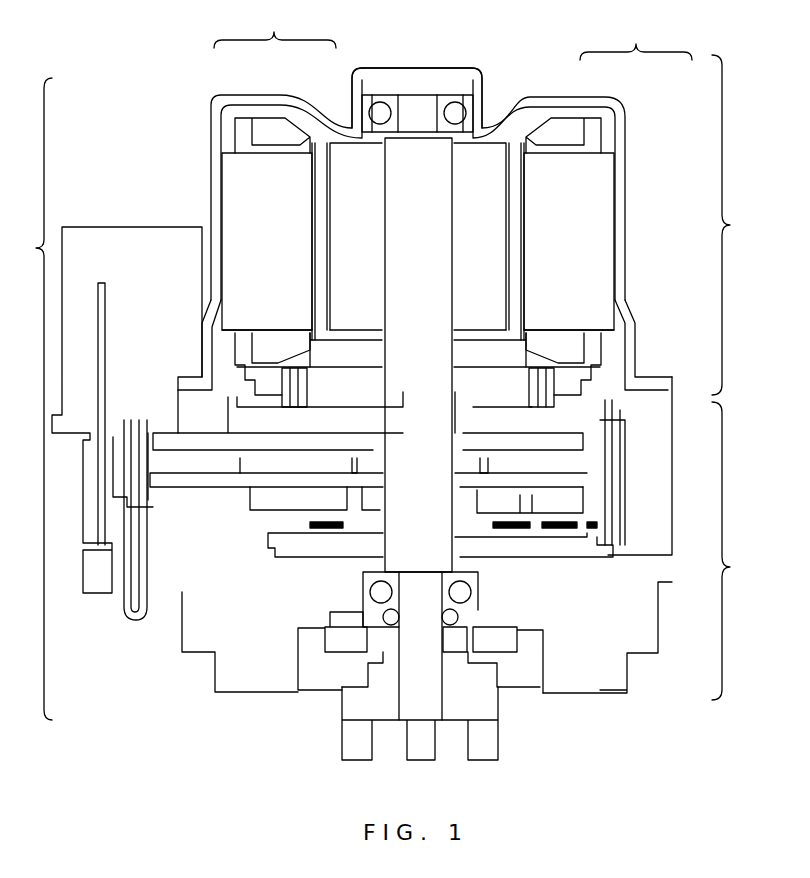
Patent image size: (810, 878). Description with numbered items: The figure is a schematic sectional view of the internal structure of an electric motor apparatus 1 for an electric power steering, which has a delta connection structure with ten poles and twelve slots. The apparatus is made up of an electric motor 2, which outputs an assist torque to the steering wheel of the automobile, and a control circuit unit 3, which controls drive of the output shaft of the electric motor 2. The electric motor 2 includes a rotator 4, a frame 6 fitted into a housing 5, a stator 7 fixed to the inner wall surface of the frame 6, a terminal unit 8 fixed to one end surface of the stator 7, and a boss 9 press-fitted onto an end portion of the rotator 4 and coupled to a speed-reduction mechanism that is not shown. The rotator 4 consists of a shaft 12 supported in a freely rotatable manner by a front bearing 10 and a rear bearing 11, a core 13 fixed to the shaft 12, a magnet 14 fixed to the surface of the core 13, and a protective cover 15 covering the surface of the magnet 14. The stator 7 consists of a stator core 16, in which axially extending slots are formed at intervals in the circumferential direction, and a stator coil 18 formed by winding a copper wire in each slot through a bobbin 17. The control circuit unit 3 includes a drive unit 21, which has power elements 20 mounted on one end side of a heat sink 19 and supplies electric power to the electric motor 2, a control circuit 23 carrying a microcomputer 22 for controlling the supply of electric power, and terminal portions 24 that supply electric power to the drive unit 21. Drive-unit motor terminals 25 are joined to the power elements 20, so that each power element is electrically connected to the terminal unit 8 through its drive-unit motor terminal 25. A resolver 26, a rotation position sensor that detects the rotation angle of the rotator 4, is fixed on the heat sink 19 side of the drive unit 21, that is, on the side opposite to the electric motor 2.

The electric motor apparatus 1 is at (33, 399).
The electric motor 2 is at (732, 225).
The control circuit unit 3 is at (733, 551).
The rotator 4 is at (275, 25).
The housing 5 is at (647, 480).
The frame 6 is at (567, 100).
The stator 7 is at (636, 39).
The terminal unit 8 is at (507, 380).
The boss 9 is at (353, 742).
The front bearing 10 is at (458, 600).
The rear bearing 11 is at (480, 103).
The shaft 12 is at (368, 107).
The core 13 is at (395, 160).
The magnet 14 is at (312, 185).
The protective cover 15 is at (320, 190).
The stator core 16 is at (598, 176).
The bobbin 17 is at (596, 137).
The stator coil 18 is at (563, 133).
The heat sink 19 is at (645, 631).
The power elements 20 is at (283, 543).
The drive unit 21 is at (228, 550).
The microcomputer 22 is at (620, 447).
The control circuit 23 is at (213, 560).
The terminal portions 24 is at (552, 530).
The drive-unit motor terminals 25 is at (630, 545).
The resolver 26 is at (337, 640).